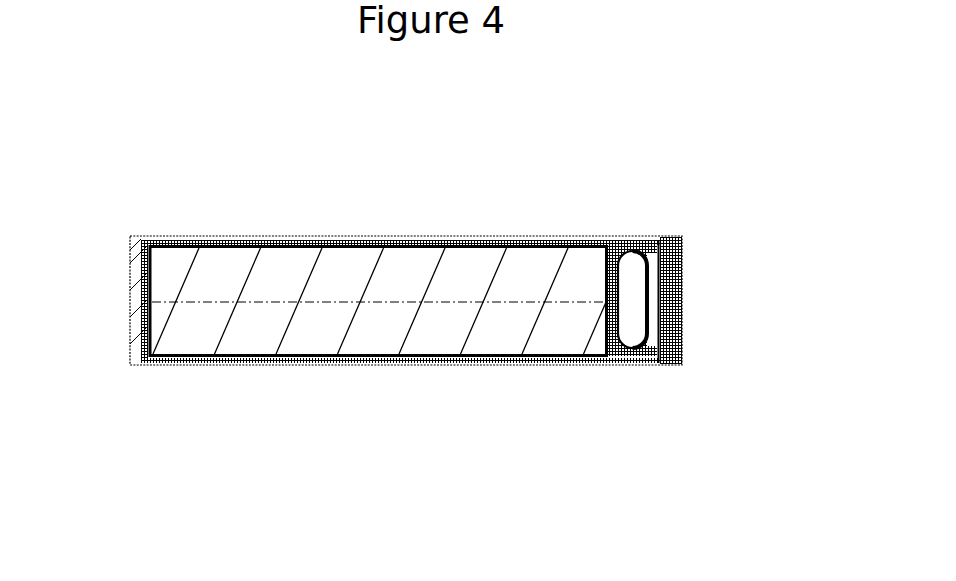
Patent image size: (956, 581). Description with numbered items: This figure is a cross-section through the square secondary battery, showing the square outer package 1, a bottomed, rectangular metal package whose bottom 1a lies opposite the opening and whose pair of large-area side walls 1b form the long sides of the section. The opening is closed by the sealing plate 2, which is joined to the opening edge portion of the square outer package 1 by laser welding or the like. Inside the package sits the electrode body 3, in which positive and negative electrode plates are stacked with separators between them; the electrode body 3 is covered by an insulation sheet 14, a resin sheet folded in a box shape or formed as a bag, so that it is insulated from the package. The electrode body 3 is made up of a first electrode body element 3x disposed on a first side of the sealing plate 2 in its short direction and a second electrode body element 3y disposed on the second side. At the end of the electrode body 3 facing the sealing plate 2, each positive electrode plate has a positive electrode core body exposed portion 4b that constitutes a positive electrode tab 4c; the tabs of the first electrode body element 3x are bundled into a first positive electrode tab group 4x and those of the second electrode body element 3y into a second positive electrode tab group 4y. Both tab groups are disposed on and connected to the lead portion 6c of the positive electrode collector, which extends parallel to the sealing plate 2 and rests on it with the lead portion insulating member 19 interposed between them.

The square outer package 1 is at (313, 350).
The bottom 1a is at (130, 293).
The large-area side walls 1b is at (310, 237).
The insulation sheet 14 is at (182, 237).
The sealing plate 2 is at (682, 250).
The electrode body 3 is at (391, 230).
The first electrode body element 3x is at (458, 277).
The second electrode body element 3y is at (508, 330).
The positive electrode core body exposed portion 4b is at (612, 305).
The positive electrode tab 4c is at (617, 255).
The first positive electrode tab group 4x is at (640, 252).
The second positive electrode tab group 4y is at (633, 340).
The lead portion insulating member 19 is at (682, 283).
The lead portion 6c is at (682, 315).